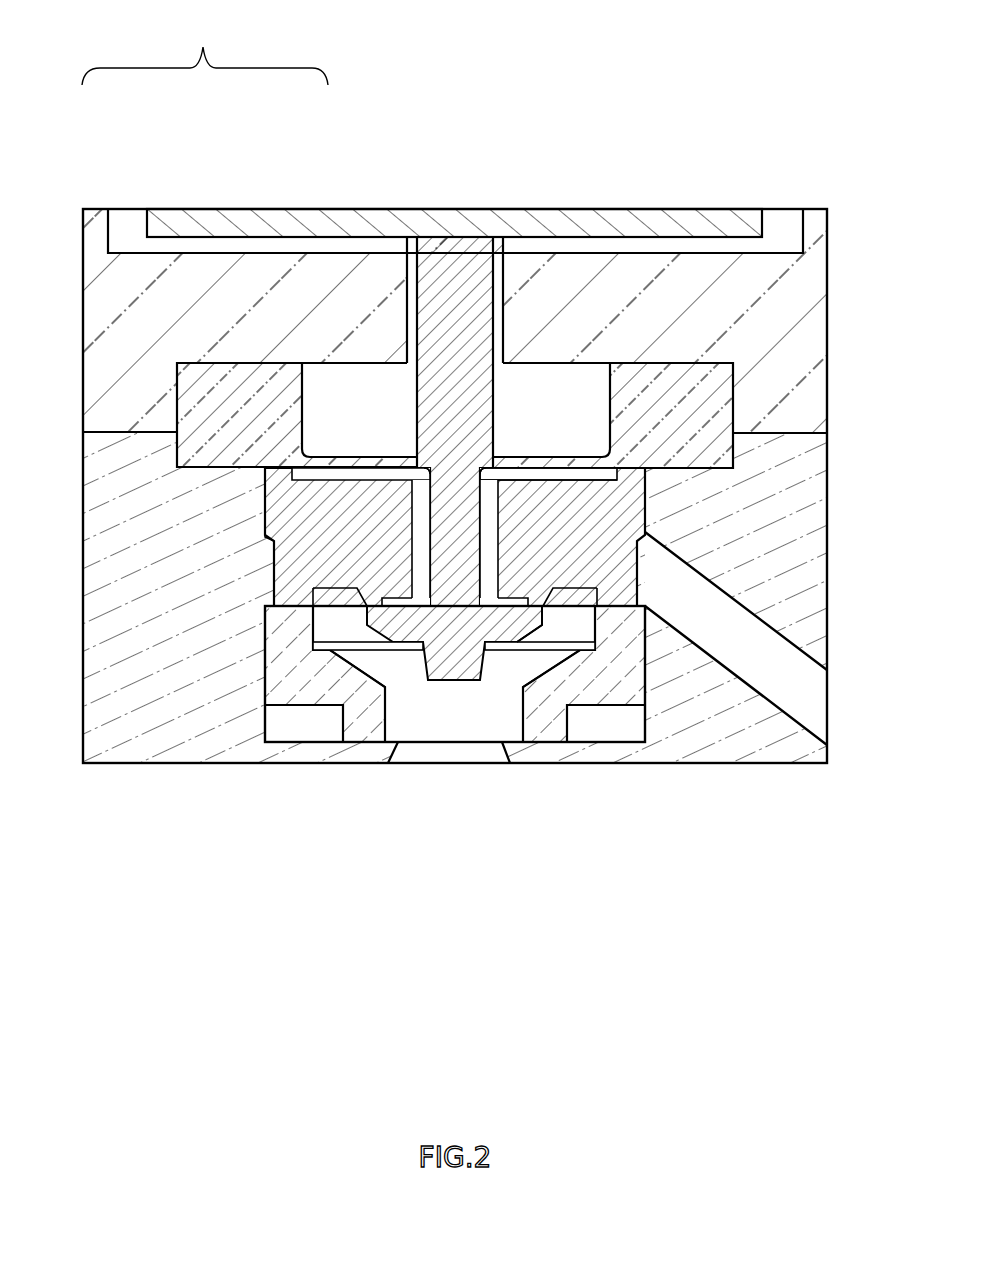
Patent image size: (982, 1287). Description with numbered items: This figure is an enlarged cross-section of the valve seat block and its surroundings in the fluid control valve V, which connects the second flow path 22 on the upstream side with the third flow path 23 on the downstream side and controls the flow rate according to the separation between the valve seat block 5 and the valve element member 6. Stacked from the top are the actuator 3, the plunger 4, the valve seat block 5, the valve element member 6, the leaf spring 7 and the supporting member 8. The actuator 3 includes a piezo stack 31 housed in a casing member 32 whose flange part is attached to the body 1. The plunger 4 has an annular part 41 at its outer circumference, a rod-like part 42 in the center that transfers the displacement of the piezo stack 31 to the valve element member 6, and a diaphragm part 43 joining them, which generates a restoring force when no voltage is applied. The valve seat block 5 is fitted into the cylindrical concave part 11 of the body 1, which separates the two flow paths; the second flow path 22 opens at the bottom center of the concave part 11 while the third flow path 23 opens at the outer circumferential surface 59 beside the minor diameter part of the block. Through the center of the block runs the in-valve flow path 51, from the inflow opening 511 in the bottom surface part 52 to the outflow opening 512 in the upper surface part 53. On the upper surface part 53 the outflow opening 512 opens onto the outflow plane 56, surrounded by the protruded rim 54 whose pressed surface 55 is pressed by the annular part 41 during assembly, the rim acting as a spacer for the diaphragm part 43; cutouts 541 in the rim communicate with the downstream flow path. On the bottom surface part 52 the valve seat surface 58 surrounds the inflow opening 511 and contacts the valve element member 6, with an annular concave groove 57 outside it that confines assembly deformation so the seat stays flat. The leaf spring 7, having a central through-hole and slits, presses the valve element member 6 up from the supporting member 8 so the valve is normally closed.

The fluid control valve V is at (607, 145).
The body 1 is at (208, 763).
The actuator 3 is at (205, 53).
The piezo stack 31 is at (317, 207).
The casing member 32 is at (93, 207).
The plunger 4 is at (521, 392).
The annular part 41 is at (237, 363).
The rod-like part 42 is at (412, 306).
The diaphragm part 43 is at (363, 457).
The valve seat block 5 is at (222, 507).
The in-valve flow path 51 is at (416, 543).
The inflow opening 511 is at (413, 610).
The outflow opening 512 is at (424, 470).
The bottom surface part 52 is at (452, 616).
The upper surface part 53 is at (483, 455).
The protruded rim 54 is at (277, 472).
The cutouts 541 is at (485, 484).
The pressed surface 55 is at (280, 467).
The outflow plane 56 is at (560, 467).
The concave groove 57 is at (330, 598).
The valve seat surface 58 is at (517, 610).
The outer circumferential surface 59 is at (256, 545).
The valve element member 6 is at (367, 614).
The leaf spring 7 is at (378, 657).
The supporting member 8 is at (265, 686).
The concave part 11 is at (645, 515).
The second flow path 22 is at (455, 763).
The third flow path 23 is at (737, 680).